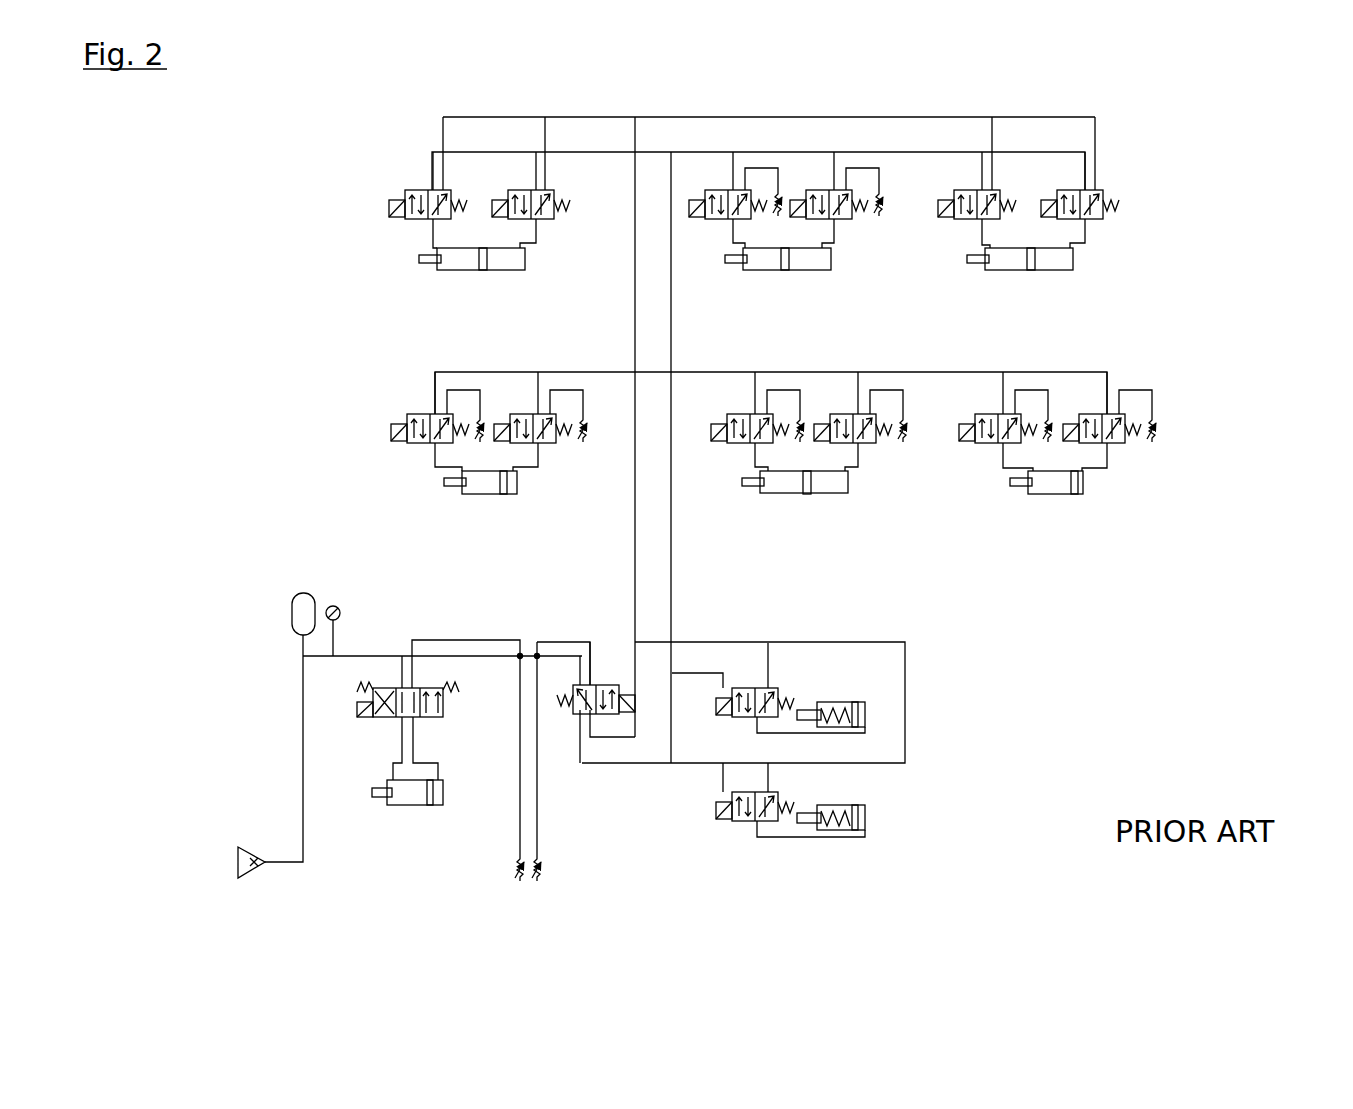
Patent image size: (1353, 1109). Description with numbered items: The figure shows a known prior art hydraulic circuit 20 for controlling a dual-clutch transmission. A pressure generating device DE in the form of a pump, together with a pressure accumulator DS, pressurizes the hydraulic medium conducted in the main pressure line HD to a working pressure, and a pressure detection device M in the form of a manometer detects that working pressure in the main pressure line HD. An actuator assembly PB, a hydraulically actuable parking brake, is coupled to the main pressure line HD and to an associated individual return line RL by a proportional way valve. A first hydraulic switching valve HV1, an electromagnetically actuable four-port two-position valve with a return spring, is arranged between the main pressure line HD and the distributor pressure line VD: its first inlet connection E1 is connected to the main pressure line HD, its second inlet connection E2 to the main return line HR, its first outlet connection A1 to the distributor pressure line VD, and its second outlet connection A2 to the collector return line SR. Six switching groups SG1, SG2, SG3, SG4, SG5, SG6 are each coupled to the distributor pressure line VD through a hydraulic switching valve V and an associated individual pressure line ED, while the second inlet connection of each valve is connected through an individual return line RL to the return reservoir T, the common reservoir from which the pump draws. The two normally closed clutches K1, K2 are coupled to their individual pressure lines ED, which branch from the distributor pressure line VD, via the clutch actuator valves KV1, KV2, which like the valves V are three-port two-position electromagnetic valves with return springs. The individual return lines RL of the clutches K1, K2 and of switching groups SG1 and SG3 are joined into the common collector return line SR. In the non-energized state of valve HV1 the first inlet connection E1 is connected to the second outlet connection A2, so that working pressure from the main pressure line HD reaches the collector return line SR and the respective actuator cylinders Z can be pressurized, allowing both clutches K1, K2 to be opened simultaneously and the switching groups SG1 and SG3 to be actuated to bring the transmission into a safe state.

The hydraulic circuit 20 is at (243, 217).
The collector return line SR is at (572, 117).
The distributor pressure line VD is at (697, 152).
The individual return line RL is at (445, 136).
The individual pressure line ED is at (432, 162).
The first inlet connection E1 is at (582, 473).
The second inlet connection E2 is at (623, 456).
The first outlet connection A1 is at (649, 543).
The second outlet connection A2 is at (612, 727).
The hydraulic switching valve V is at (570, 188).
The return reservoir T is at (815, 547).
The actuator cylinder Z is at (523, 268).
The switching group SG1 is at (452, 272).
The switching group SG2 is at (780, 272).
The switching group SG3 is at (1032, 272).
The switching group SG4 is at (470, 496).
The switching group SG5 is at (790, 496).
The switching group SG6 is at (1048, 496).
The pressure accumulator DS is at (303, 593).
The pressure detection device M is at (335, 606).
The main pressure line HD is at (364, 654).
The pressure generating device DE is at (257, 866).
The actuator assembly PB is at (408, 806).
The main return line HR is at (562, 642).
The first hydraulic switching valve HV1 is at (583, 766).
The clutch actuator valve KV1 is at (737, 719).
The clutch actuator valve KV2 is at (740, 824).
The first clutch K1 is at (840, 702).
The second clutch K2 is at (838, 834).